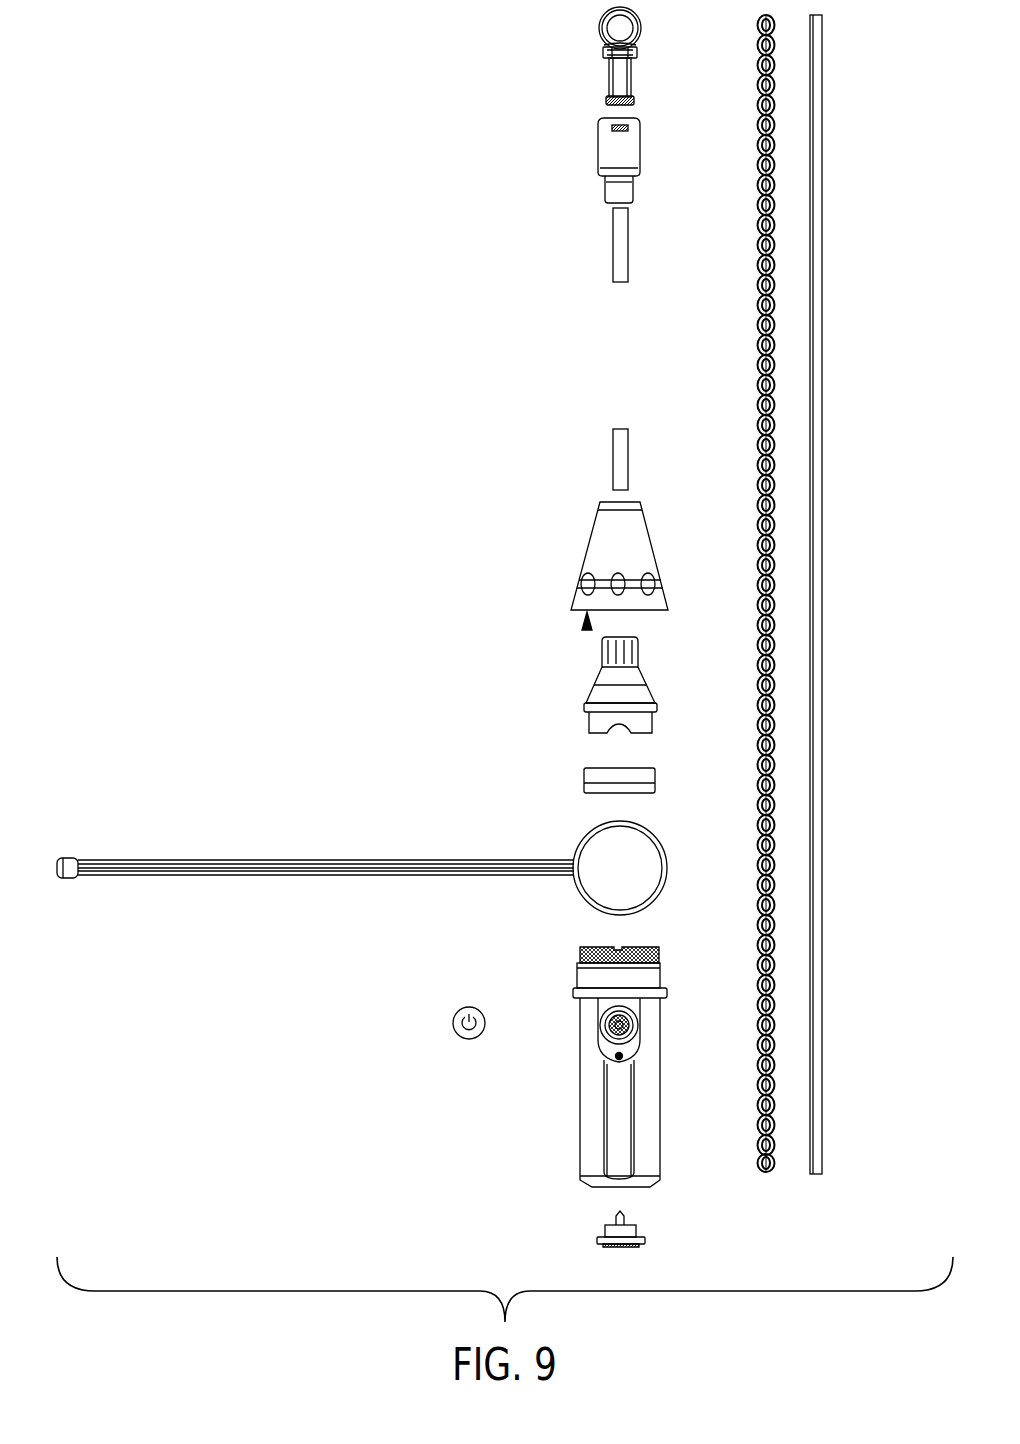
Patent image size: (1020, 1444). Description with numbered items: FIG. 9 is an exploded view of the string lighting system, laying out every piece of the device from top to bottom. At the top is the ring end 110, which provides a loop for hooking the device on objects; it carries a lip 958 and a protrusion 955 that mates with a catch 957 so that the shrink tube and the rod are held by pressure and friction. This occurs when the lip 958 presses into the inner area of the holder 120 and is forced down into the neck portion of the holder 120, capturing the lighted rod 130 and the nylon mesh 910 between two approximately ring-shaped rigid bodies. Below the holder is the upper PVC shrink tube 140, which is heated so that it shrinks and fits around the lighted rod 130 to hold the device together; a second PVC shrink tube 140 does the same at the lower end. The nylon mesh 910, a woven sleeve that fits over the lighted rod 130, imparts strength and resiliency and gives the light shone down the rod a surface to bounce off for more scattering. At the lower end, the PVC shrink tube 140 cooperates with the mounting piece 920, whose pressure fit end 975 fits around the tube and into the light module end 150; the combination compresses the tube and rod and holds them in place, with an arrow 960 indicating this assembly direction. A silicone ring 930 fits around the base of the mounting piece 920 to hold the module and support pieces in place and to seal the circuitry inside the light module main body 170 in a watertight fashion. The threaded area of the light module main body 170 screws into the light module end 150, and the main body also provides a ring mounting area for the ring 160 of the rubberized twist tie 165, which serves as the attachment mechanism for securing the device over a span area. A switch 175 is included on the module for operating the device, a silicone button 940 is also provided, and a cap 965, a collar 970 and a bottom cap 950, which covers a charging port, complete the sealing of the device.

The ring end 110 is at (601, 31).
The protrusion 955 is at (612, 61).
The lip 958 is at (631, 103).
The catch 957 is at (612, 128).
The holder 120 is at (598, 160).
The PVC shrink tube 140 is at (612, 238).
The light module end 150 is at (590, 540).
The alignment arrow 960 is at (582, 633).
The mounting piece 920 is at (600, 690).
The pressure fit end 975 is at (634, 656).
The silicone ring 930 is at (594, 777).
The ring 160 is at (583, 841).
The rubberized twist tie 165 is at (395, 860).
The cap 965 is at (660, 951).
The collar 970 is at (655, 982).
The light module main body 170 is at (580, 1138).
The switch 175 is at (603, 1025).
The silicone button 940 is at (461, 1010).
The bottom cap 950 is at (597, 1242).
The nylon mesh 910 is at (757, 195).
The lighted rod 130 is at (817, 770).